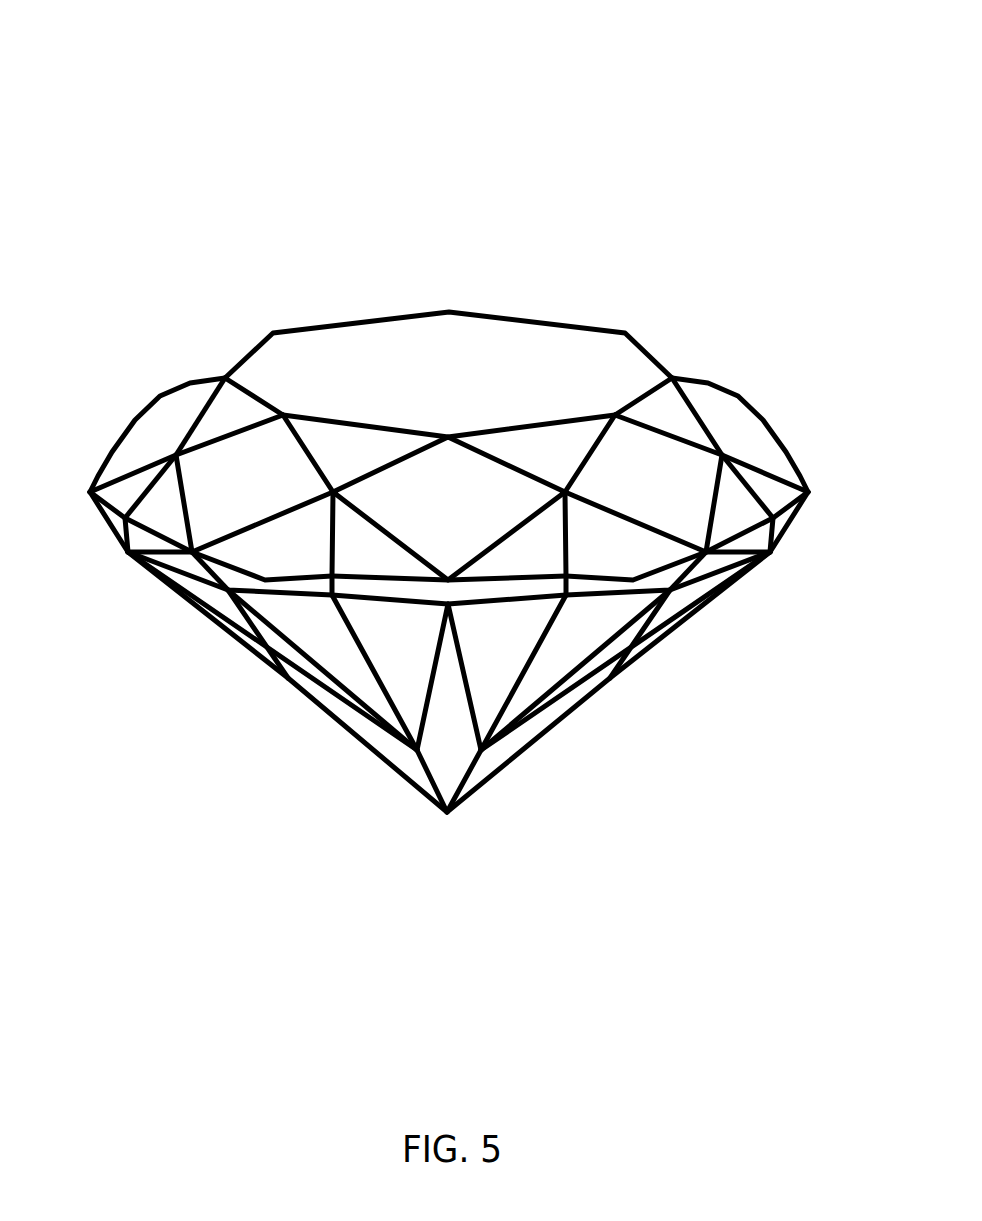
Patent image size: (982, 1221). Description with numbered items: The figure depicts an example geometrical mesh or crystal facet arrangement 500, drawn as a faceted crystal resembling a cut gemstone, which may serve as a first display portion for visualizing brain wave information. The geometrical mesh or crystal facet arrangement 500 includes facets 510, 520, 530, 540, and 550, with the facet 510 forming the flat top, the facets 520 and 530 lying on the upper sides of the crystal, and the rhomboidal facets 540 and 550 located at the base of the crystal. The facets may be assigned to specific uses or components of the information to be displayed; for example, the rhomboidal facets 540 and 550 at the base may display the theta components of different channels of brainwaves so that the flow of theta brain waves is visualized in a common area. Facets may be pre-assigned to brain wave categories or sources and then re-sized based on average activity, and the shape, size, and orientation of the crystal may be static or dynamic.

The geometrical mesh or crystal facet arrangement 500 is at (452, 72).
The facet 510 is at (450, 362).
The facet 520 is at (727, 420).
The facet 530 is at (173, 428).
The rhomboidal facet 540 is at (358, 727).
The rhomboidal facet 550 is at (507, 753).